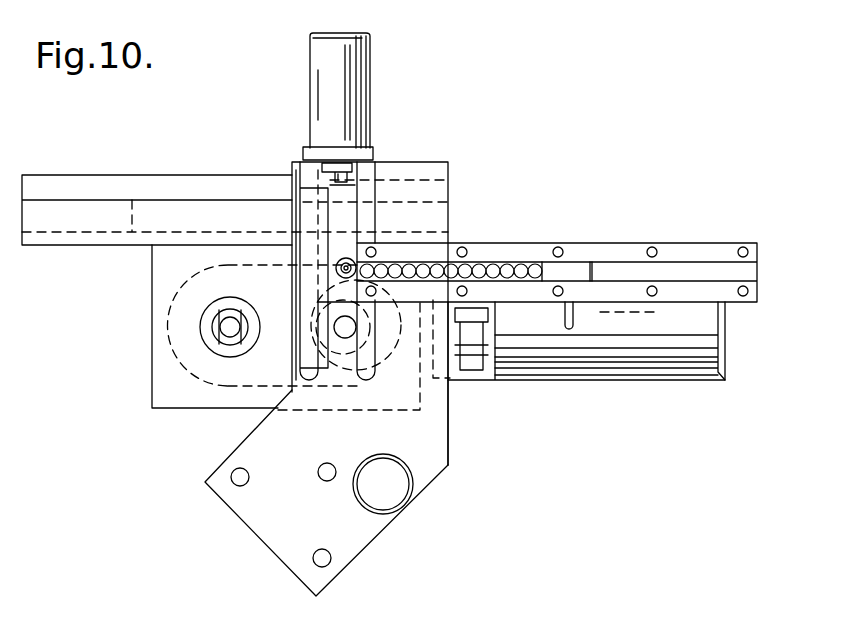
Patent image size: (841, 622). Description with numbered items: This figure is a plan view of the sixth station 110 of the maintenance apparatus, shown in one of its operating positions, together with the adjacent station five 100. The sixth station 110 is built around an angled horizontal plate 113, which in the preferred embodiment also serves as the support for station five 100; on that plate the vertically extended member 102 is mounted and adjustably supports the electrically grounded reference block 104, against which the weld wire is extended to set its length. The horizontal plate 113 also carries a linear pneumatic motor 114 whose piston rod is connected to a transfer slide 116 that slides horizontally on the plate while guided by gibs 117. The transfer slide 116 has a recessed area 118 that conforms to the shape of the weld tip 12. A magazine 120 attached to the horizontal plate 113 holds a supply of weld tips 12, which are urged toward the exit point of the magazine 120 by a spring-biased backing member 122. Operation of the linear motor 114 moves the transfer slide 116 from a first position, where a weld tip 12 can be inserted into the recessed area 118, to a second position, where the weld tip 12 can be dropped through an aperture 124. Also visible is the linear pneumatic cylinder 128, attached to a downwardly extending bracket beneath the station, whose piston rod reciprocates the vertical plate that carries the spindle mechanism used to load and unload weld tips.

The station five 100 is at (440, 478).
The vertically extended member 102 is at (370, 547).
The reference block 104 is at (393, 498).
The sixth station 110 is at (457, 165).
The horizontal plate 113 is at (452, 440).
The linear pneumatic motor 114 is at (362, 106).
The transfer slide 116 is at (348, 192).
The gibs 117 is at (310, 172).
The recessed area 118 is at (348, 260).
The weld tip 12 is at (336, 272).
The magazine 120 is at (678, 243).
The backing member 122 is at (573, 270).
The aperture 124 is at (340, 328).
The linear pneumatic cylinder 128 is at (607, 368).